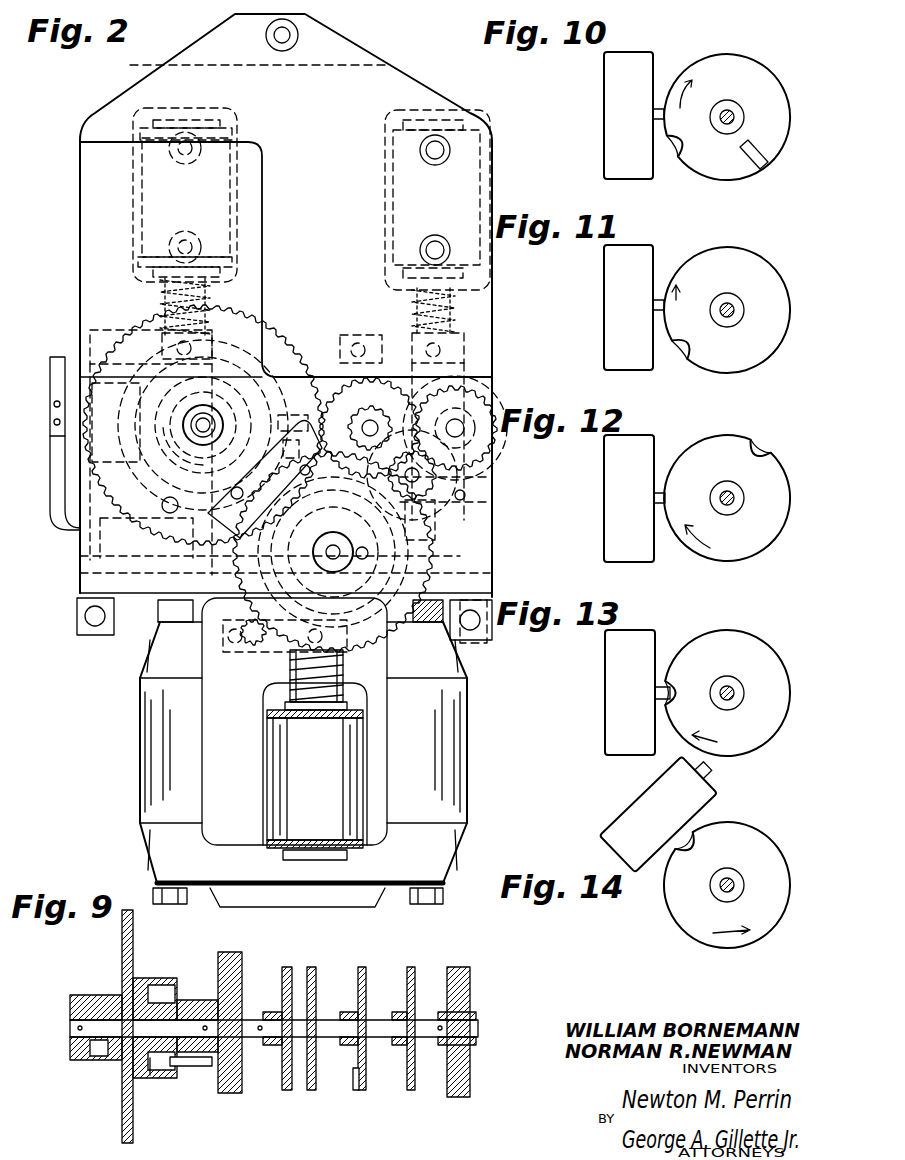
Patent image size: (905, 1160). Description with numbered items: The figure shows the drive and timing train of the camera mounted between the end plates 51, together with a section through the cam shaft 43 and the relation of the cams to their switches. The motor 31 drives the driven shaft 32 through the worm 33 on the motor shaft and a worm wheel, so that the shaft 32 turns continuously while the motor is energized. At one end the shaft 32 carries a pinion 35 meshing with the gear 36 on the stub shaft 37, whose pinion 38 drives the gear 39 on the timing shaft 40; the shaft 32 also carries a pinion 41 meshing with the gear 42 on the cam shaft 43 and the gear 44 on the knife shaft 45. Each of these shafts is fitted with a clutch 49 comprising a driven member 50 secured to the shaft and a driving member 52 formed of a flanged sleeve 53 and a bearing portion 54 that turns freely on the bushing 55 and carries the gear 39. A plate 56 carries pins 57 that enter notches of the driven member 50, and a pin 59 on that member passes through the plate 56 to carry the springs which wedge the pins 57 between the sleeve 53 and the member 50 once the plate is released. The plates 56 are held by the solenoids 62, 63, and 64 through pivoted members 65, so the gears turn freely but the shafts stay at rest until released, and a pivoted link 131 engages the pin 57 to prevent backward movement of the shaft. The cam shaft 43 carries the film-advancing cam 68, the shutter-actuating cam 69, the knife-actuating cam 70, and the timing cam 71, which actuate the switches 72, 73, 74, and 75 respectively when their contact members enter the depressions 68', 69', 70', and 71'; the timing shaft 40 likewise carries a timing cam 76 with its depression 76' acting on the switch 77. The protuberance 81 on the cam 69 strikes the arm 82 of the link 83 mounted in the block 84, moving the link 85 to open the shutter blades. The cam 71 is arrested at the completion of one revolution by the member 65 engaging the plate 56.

In FIG. 2, the motor 31 is at (465, 775).
In FIG. 2, the driven shaft 32 is at (364, 420).
In FIG. 2, the worm 33 is at (290, 412).
In FIG. 2, the pinion 35 is at (372, 421).
In FIG. 2, the gear 36 is at (470, 500).
In FIG. 2, the stub shaft 37 is at (418, 478).
In FIG. 2, the pinion 38 is at (425, 480).
In FIG. 2, the gear 39 is at (433, 566).
In FIG. 2, the timing shaft 40 is at (334, 550).
In FIG. 14, the timing shaft 40 is at (722, 893).
In FIG. 2, the pinion 41 is at (336, 362).
In FIG. 2, the gear 42 is at (285, 325).
In FIG. 9, the gear 42 is at (122, 1118).
In FIG. 2, the cam shaft 43 is at (205, 423).
In FIG. 9, the cam shaft 43 is at (425, 1040).
In FIG. 10, the cam shaft 43 is at (727, 124).
In FIG. 11, the cam shaft 43 is at (730, 318).
In FIG. 12, the cam shaft 43 is at (727, 506).
In FIG. 13, the cam shaft 43 is at (730, 702).
In FIG. 2, the gear 44 is at (490, 382).
In FIG. 2, the knife shaft 45 is at (468, 440).
In FIG. 2, the clutch 49 is at (90, 335).
In FIG. 9, the driven member 50 is at (182, 1012).
In FIG. 2, the end plates 51 is at (92, 234).
In FIG. 9, the end plates 51 is at (240, 978).
In FIG. 9, the driving member 52 is at (137, 978).
In FIG. 9, the flanged sleeve 53 is at (152, 1078).
In FIG. 9, the bearing portion 54 is at (95, 1057).
In FIG. 9, the bushing 55 is at (80, 1012).
In FIG. 9, the plate 56 is at (160, 988).
In FIG. 9, the pins 57 is at (176, 996).
In FIG. 2, the pin 59 is at (396, 552).
In FIG. 9, the pin 59 is at (188, 1066).
In FIG. 2, the solenoid 62 is at (275, 754).
In FIG. 2, the solenoid 63 is at (238, 205).
In FIG. 2, the solenoid 64 is at (390, 212).
In FIG. 2, the pivoted members 65 is at (217, 327).
In FIG. 9, the film-advancing cam 68 is at (409, 1049).
In FIG. 11, the film-advancing cam 68 is at (729, 303).
In FIG. 11, the depression 68' is at (682, 367).
In FIG. 9, the shutter-actuating cam 69 is at (360, 1049).
In FIG. 10, the shutter-actuating cam 69 is at (727, 99).
In FIG. 10, the depression 69' is at (677, 168).
In FIG. 9, the knife-actuating cam 70 is at (320, 1049).
In FIG. 12, the knife-actuating cam 70 is at (731, 504).
In FIG. 12, the depression 70' is at (778, 434).
In FIG. 9, the timing cam 71 is at (278, 1049).
In FIG. 13, the timing cam 71 is at (734, 691).
In FIG. 13, the cam notch 71' is at (681, 655).
In FIG. 11, the switch 72 is at (604, 295).
In FIG. 10, the switch 73 is at (604, 103).
In FIG. 12, the switch 74 is at (604, 515).
In FIG. 13, the switch 75 is at (605, 690).
In FIG. 2, the timing cam 76 is at (160, 612).
In FIG. 14, the timing cam 76 is at (731, 885).
In FIG. 14, the cam notch 76' is at (661, 876).
In FIG. 2, the switch 77 is at (265, 480).
In FIG. 14, the switch 77 is at (638, 808).
In FIG. 9, the protuberance 81 is at (353, 1072).
In FIG. 10, the protuberance 81 is at (766, 163).
In FIG. 2, the arm 82 is at (202, 445).
In FIG. 2, the link 83 is at (76, 546).
In FIG. 2, the block 84 is at (75, 577).
In FIG. 2, the link 85 is at (50, 468).
In FIG. 2, the pivoted link 131 is at (160, 490).